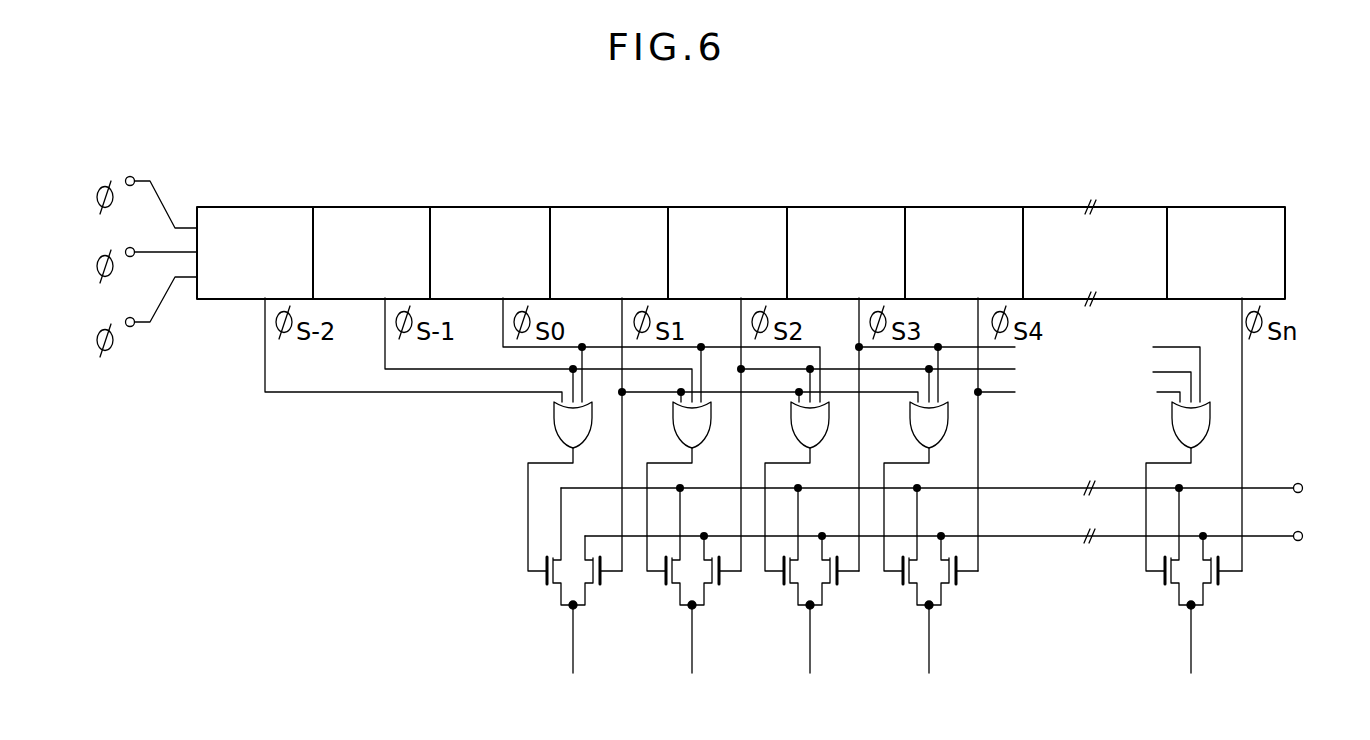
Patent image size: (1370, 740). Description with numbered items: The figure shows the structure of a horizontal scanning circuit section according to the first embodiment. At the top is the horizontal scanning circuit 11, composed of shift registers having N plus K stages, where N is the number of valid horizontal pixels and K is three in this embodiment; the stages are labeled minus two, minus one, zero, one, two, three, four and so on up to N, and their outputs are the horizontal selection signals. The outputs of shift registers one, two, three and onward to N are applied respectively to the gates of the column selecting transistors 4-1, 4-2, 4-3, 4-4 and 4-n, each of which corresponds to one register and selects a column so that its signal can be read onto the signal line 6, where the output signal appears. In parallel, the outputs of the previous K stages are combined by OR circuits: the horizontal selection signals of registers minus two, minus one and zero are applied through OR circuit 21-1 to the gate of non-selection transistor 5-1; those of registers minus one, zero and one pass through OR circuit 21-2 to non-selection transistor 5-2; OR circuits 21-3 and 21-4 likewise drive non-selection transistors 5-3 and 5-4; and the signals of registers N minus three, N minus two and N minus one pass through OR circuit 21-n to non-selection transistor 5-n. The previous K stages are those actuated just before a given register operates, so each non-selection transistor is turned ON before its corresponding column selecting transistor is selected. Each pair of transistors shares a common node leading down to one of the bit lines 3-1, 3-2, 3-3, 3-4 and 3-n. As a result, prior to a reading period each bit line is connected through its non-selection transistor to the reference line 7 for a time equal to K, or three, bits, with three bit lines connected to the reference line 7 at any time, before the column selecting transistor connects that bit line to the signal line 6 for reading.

The horizontal scanning circuit 11 is at (1145, 207).
The OR circuit 21-1 is at (556, 418).
The OR circuit 21-2 is at (675, 418).
The OR circuit 21-3 is at (793, 418).
The OR circuit 21-4 is at (912, 418).
The OR circuit 21-n is at (1174, 418).
The non-selection transistor 5-1 is at (552, 584).
The non-selection transistor 5-2 is at (671, 584).
The non-selection transistor 5-3 is at (789, 584).
The non-selection transistor 5-4 is at (908, 584).
The non-selection transistor 5-n is at (1160, 584).
The column selecting transistor 4-1 is at (600, 589).
The column selecting transistor 4-2 is at (719, 589).
The column selecting transistor 4-3 is at (837, 589).
The column selecting transistor 4-4 is at (956, 589).
The column selecting transistor 4-n is at (1218, 589).
The bit line 3-1 is at (574, 660).
The bit line 3-2 is at (693, 660).
The bit line 3-3 is at (811, 660).
The bit line 3-4 is at (930, 660).
The bit line 3-n is at (1190, 660).
The reference line 7 is at (1270, 486).
The signal line 6 is at (1245, 540).